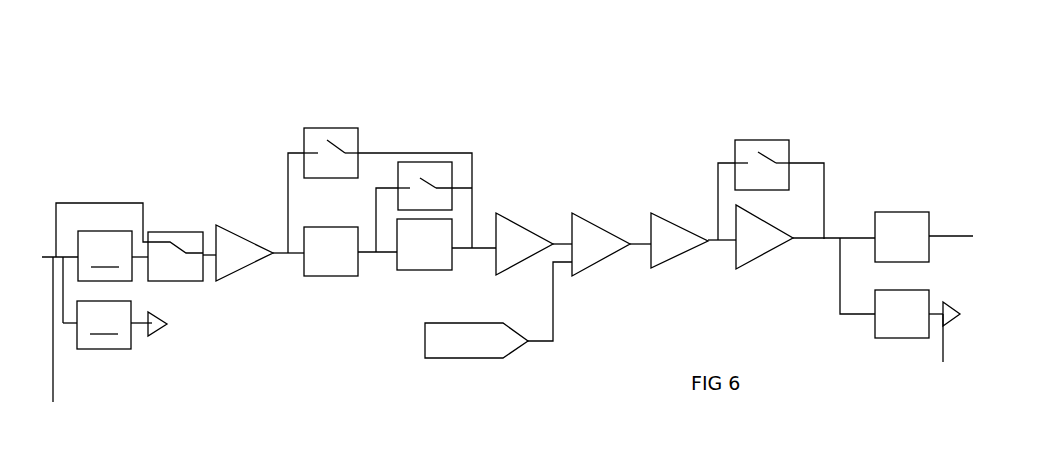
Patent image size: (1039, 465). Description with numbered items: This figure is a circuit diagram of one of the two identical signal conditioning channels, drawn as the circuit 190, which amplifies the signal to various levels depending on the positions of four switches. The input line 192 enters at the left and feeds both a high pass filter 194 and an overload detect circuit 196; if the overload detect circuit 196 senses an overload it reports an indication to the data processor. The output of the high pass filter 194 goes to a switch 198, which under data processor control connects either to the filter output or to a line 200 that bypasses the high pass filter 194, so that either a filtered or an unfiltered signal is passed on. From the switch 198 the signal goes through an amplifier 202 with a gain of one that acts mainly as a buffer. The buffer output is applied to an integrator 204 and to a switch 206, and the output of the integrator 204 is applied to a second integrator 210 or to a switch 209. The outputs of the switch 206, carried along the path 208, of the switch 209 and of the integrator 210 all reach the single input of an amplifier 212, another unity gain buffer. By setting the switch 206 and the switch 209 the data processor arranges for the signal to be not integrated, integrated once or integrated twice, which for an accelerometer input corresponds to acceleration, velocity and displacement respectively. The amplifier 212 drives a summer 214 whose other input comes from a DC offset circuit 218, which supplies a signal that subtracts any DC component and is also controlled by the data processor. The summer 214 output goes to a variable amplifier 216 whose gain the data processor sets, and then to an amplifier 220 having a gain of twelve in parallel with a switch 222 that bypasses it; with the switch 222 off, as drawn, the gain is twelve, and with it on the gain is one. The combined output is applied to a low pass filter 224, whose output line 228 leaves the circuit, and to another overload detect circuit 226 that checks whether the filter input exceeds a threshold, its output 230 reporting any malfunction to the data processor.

The circuit 190 is at (212, 98).
The input line 192 is at (61, 339).
The high pass filter 194 is at (113, 256).
The overload detect circuit 196 is at (115, 303).
The switch 198 is at (162, 232).
The line 200 is at (78, 203).
The amplifier 202 is at (233, 249).
The integrator 204 is at (327, 276).
The switch 206 is at (318, 128).
The feedback path 208 is at (397, 152).
The switch 209 is at (452, 175).
The integrator 210 is at (418, 265).
The amplifier 212 is at (508, 240).
The summer 214 is at (597, 225).
The variable amplifier 216 is at (663, 247).
The DC offset circuit 218 is at (517, 350).
The amplifier 220 is at (758, 237).
The switch 222 is at (750, 137).
The low pass filter 224 is at (905, 212).
The overload detect circuit 226 is at (905, 308).
The line 228 is at (942, 235).
The second output 230 is at (952, 342).